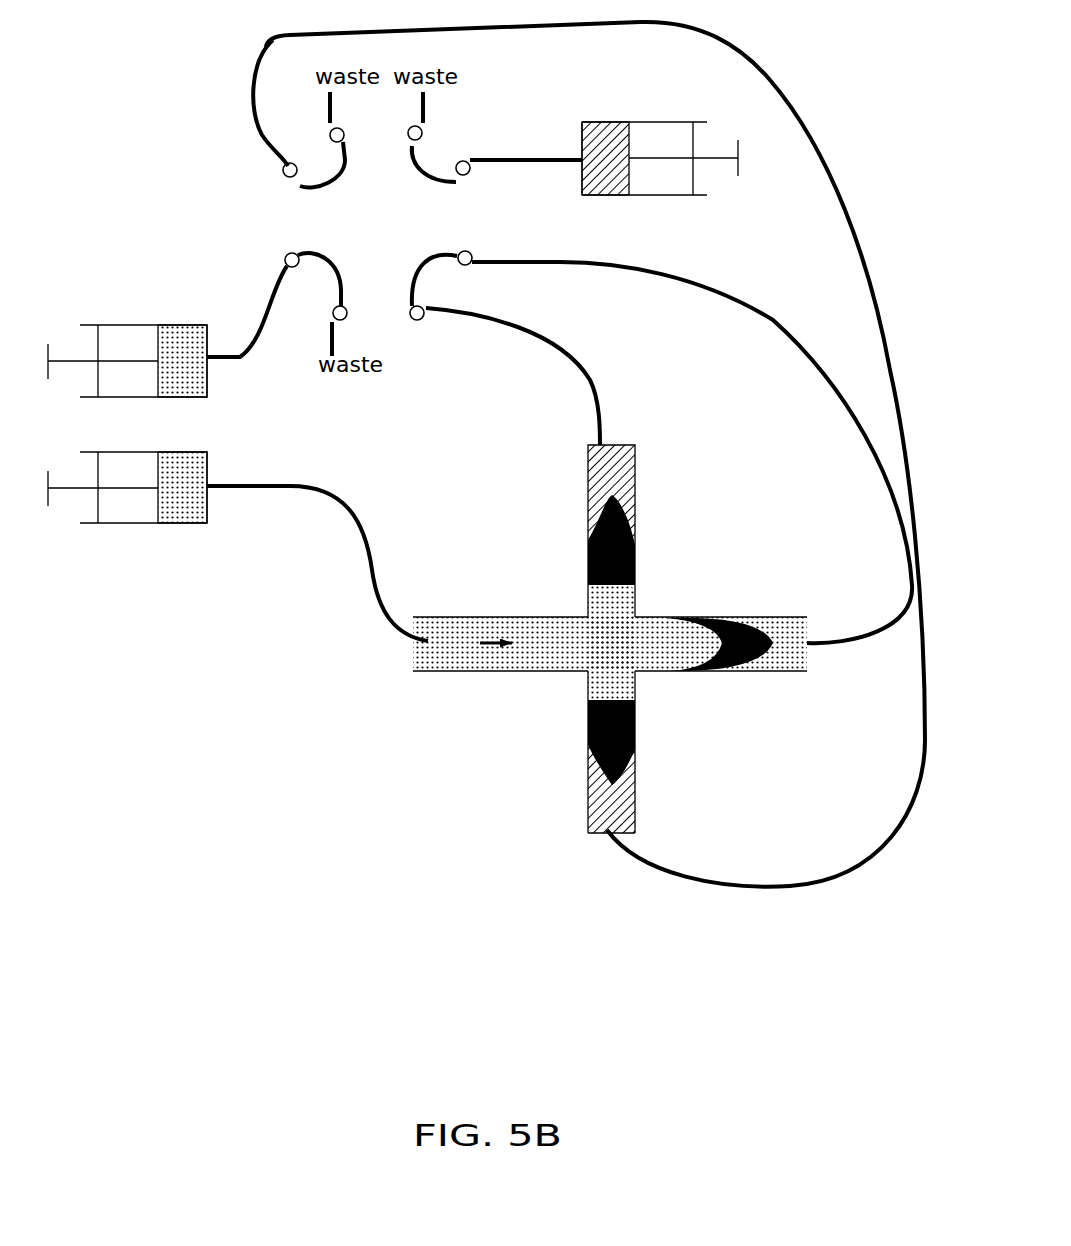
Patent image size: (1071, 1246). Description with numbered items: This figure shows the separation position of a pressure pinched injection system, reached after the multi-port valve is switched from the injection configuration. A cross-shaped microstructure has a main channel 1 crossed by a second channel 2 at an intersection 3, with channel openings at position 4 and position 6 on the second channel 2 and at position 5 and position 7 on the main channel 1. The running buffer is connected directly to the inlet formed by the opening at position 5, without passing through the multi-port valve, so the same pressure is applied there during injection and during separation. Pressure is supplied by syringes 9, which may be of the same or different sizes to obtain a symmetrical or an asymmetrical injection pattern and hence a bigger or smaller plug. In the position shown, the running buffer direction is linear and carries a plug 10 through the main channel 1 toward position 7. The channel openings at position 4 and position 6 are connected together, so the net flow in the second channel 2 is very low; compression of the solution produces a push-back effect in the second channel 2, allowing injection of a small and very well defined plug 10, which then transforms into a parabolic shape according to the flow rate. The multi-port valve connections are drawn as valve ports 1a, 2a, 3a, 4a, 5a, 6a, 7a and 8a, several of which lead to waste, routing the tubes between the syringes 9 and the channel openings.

The main channel 1 is at (692, 613).
The second channel 2 is at (655, 797).
The intersection 3 is at (590, 675).
The channel opening position 4 is at (593, 840).
The inlet position 5 is at (410, 665).
The channel opening position 6 is at (638, 430).
The channel opening position 7 is at (812, 676).
The syringes 9 is at (168, 402).
The plug 10 is at (732, 680).
The valve 1a is at (283, 256).
The valve 2a is at (280, 173).
The valve 3a is at (328, 131).
The valve 4a is at (425, 131).
The valve 5a is at (471, 172).
The valve 6a is at (475, 252).
The valve 7a is at (430, 333).
The valve 8a is at (333, 319).